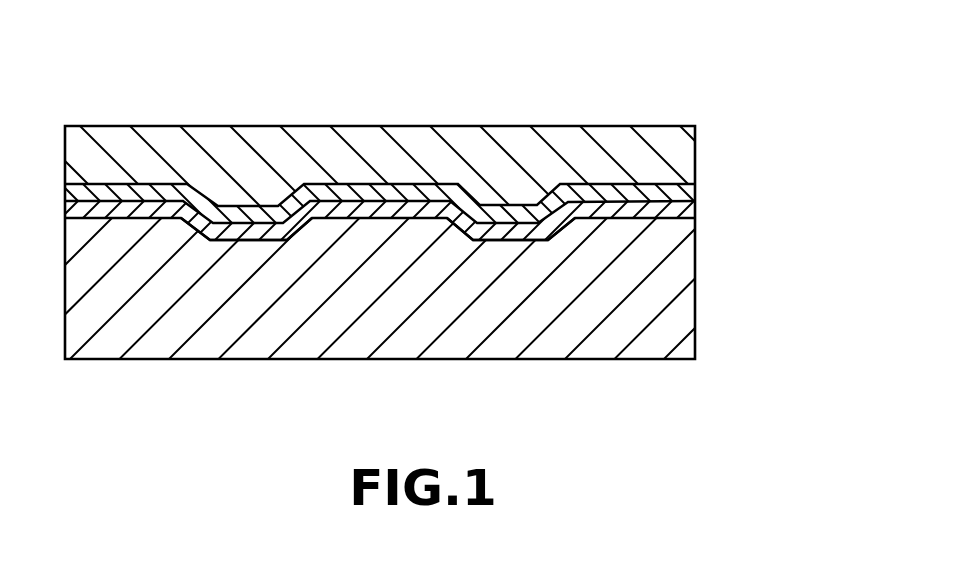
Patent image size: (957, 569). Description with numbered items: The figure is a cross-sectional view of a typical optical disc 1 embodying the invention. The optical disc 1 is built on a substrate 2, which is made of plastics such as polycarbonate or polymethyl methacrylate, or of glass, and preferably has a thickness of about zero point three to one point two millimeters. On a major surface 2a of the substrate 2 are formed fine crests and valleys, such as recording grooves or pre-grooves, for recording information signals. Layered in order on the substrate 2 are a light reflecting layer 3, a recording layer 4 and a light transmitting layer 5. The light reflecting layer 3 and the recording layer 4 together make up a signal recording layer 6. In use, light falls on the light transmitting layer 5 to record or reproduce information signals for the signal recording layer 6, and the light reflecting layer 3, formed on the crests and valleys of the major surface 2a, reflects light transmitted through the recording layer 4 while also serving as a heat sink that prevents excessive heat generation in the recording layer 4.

The optical disc 1 is at (447, 196).
The substrate 2 is at (672, 322).
The major surface 2a is at (523, 237).
The light reflecting layer 3 is at (690, 213).
The recording layer 4 is at (688, 194).
The light transmitting layer 5 is at (685, 163).
The signal recording layer 6 is at (411, 204).